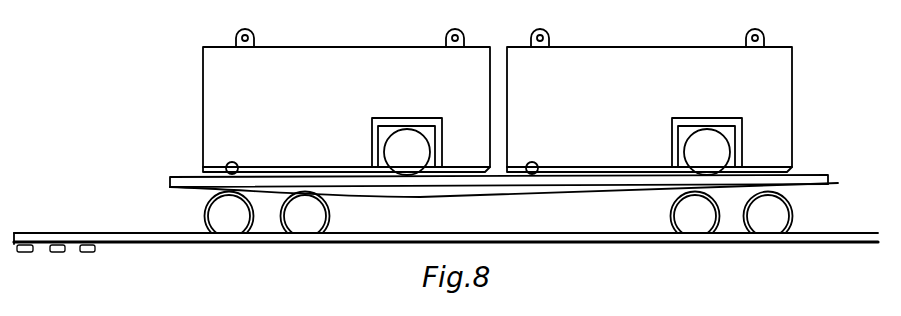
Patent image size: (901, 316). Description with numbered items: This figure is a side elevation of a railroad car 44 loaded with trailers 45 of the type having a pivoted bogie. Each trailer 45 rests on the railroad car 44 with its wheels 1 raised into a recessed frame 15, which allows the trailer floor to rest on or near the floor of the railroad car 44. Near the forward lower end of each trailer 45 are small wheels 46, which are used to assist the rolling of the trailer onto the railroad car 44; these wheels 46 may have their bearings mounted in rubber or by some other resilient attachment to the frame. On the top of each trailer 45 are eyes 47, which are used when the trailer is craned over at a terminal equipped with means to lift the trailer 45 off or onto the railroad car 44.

The wheels 1 is at (718, 152).
The recessed frame 15 is at (370, 134).
The railroad car 44 is at (533, 190).
The trailer 45 is at (497, 109).
The wheels 46 is at (235, 165).
The eyes 47 is at (461, 40).